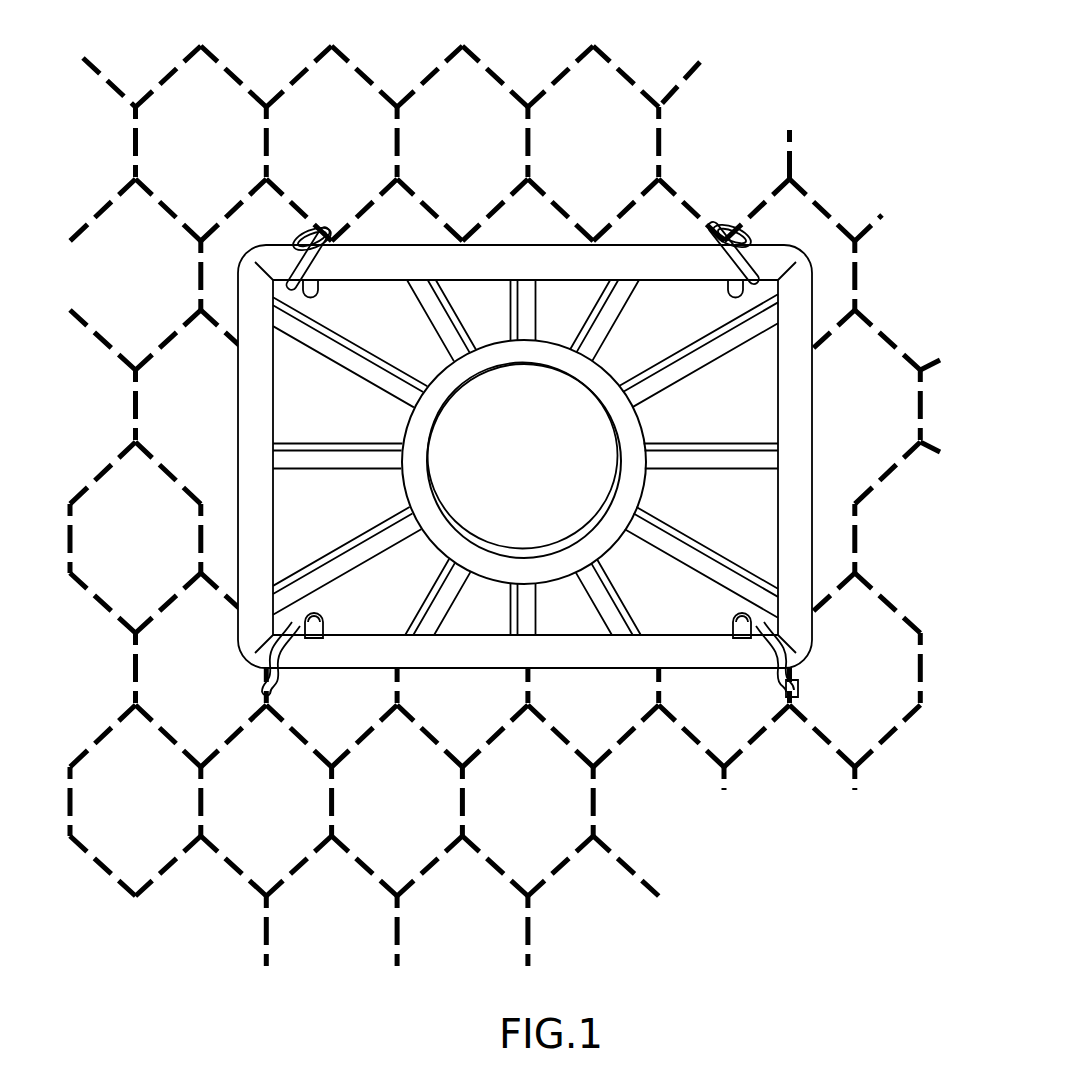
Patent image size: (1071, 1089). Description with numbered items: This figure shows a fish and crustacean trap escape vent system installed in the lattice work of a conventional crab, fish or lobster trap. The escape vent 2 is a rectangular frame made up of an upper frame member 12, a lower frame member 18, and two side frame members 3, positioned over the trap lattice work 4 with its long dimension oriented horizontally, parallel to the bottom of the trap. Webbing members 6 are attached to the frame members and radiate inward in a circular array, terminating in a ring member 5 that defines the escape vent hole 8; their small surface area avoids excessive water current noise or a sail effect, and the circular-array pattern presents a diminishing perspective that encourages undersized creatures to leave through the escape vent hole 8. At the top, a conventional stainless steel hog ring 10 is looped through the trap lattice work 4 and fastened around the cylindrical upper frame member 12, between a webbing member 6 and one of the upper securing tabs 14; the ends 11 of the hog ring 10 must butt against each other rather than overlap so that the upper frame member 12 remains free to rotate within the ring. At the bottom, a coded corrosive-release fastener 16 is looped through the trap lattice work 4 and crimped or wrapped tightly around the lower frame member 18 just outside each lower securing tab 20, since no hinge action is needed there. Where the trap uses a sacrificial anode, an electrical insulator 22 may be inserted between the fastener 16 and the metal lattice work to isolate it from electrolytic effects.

The escape vent 2 is at (543, 470).
The side frame member 3 is at (237, 417).
The trap lattice work 4 is at (660, 140).
The ring member 5 is at (633, 478).
The webbing members 6 is at (388, 382).
The escape vent hole 8 is at (510, 479).
The conventional stainless steel hog ring 10 is at (330, 230).
The end of hog ring 11 is at (295, 244).
The upper frame member 12 is at (556, 255).
The upper securing tab 14 is at (315, 290).
The coded corrosive-release fastener 16 is at (250, 688).
The lower frame member 18 is at (488, 660).
The lower securing tab 20 is at (322, 622).
The electrical insulator 22 is at (799, 686).